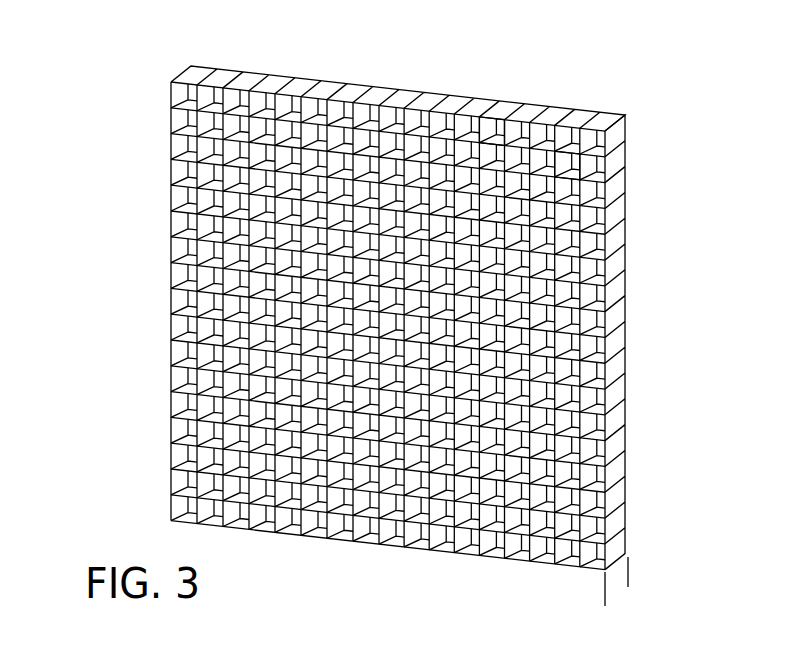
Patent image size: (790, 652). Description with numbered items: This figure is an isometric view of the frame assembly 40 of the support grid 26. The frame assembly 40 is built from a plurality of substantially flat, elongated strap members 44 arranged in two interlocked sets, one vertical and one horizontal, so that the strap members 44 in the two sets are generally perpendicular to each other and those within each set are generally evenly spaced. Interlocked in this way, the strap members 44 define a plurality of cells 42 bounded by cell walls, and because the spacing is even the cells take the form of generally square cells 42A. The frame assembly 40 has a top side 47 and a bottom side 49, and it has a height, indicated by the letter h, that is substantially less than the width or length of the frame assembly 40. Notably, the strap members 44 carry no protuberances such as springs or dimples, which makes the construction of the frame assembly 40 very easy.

The support grid 26 is at (138, 123).
The frame assembly 40 is at (403, 93).
The cells 42 is at (485, 130).
The square cells 42A is at (567, 170).
The strap members 44 is at (302, 107).
The top side 47 is at (568, 567).
The bottom side 49 is at (617, 392).
The height h is at (616, 583).